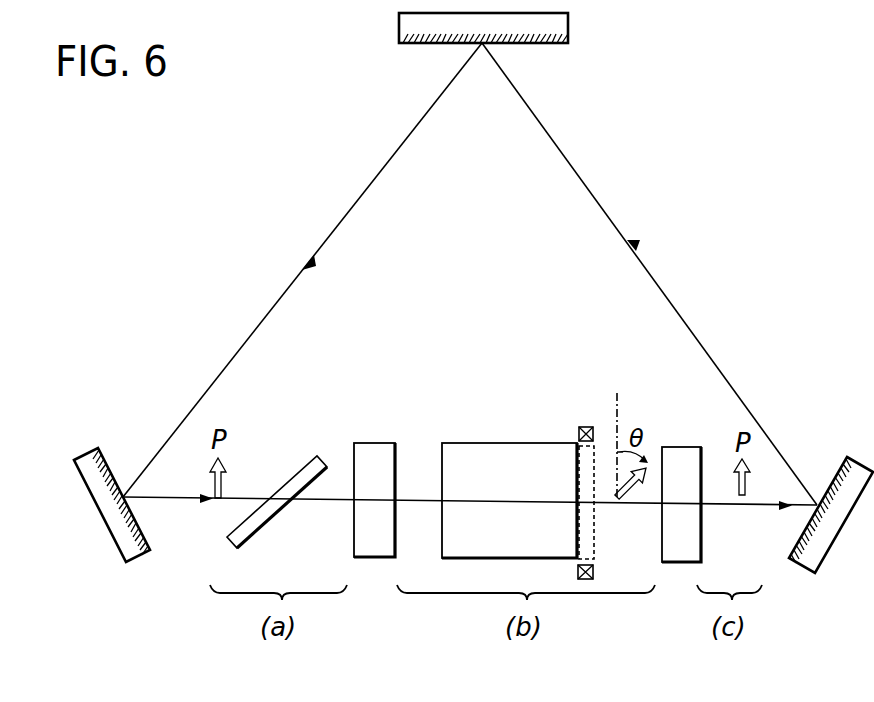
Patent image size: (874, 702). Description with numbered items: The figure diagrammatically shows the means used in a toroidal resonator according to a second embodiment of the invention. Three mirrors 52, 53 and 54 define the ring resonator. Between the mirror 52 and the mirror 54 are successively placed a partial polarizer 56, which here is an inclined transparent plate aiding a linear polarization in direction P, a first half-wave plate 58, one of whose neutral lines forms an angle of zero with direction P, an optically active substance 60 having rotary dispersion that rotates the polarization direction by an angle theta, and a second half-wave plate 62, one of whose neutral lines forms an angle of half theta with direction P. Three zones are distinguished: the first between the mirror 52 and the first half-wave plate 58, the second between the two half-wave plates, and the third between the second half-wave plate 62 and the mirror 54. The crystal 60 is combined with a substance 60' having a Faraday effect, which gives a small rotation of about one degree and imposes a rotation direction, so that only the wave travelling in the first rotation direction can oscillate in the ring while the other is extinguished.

The mirror 52 is at (86, 462).
The mirror 53 is at (540, 26).
The mirror 54 is at (849, 459).
The partial polarizer 56 is at (305, 470).
The first half-wave plate 58 is at (375, 462).
The optically active substance 60 is at (509, 473).
The substance having a Faraday effect 60' is at (602, 463).
The second half-wave plate 62 is at (683, 465).